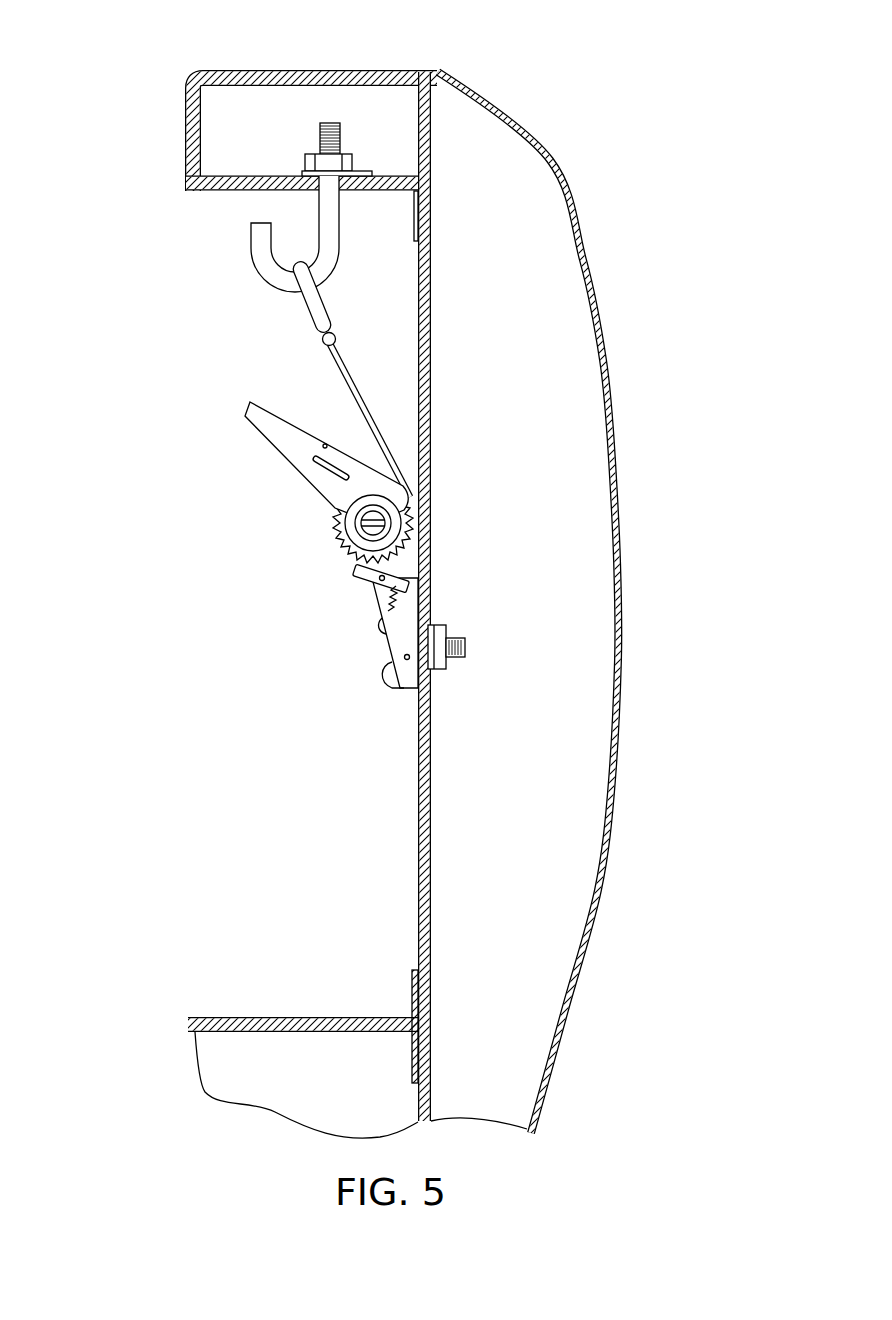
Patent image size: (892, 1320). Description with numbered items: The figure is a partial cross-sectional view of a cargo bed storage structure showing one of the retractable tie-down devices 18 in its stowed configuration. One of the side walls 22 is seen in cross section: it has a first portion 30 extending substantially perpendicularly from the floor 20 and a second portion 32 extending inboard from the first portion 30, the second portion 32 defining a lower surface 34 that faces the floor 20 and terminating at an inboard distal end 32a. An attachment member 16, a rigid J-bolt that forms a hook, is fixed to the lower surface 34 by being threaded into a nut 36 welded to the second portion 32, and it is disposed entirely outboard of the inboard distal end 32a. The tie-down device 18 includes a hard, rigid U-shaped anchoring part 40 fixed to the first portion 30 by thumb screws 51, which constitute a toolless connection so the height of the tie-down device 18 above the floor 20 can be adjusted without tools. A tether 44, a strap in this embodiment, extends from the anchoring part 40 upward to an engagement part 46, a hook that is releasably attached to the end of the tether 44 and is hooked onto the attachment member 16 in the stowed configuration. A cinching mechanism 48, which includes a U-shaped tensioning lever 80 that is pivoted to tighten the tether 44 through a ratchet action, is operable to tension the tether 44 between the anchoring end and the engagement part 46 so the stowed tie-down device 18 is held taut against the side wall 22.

The attachment member 16 is at (258, 276).
The tie-down device 18 is at (208, 592).
The floor 20 is at (275, 1017).
The side wall 22 is at (585, 206).
The first portion 30 is at (415, 815).
The second portion 32 is at (293, 68).
The inboard distal end 32a is at (186, 112).
The lower surface 34 is at (250, 193).
The nut 36 is at (354, 167).
The anchoring part 40 is at (382, 645).
The tether 44 is at (370, 400).
The engagement part 46 is at (326, 300).
The cinching mechanism 48 is at (318, 514).
The thumb screw 51 is at (465, 645).
The tensioning lever 80 is at (244, 408).